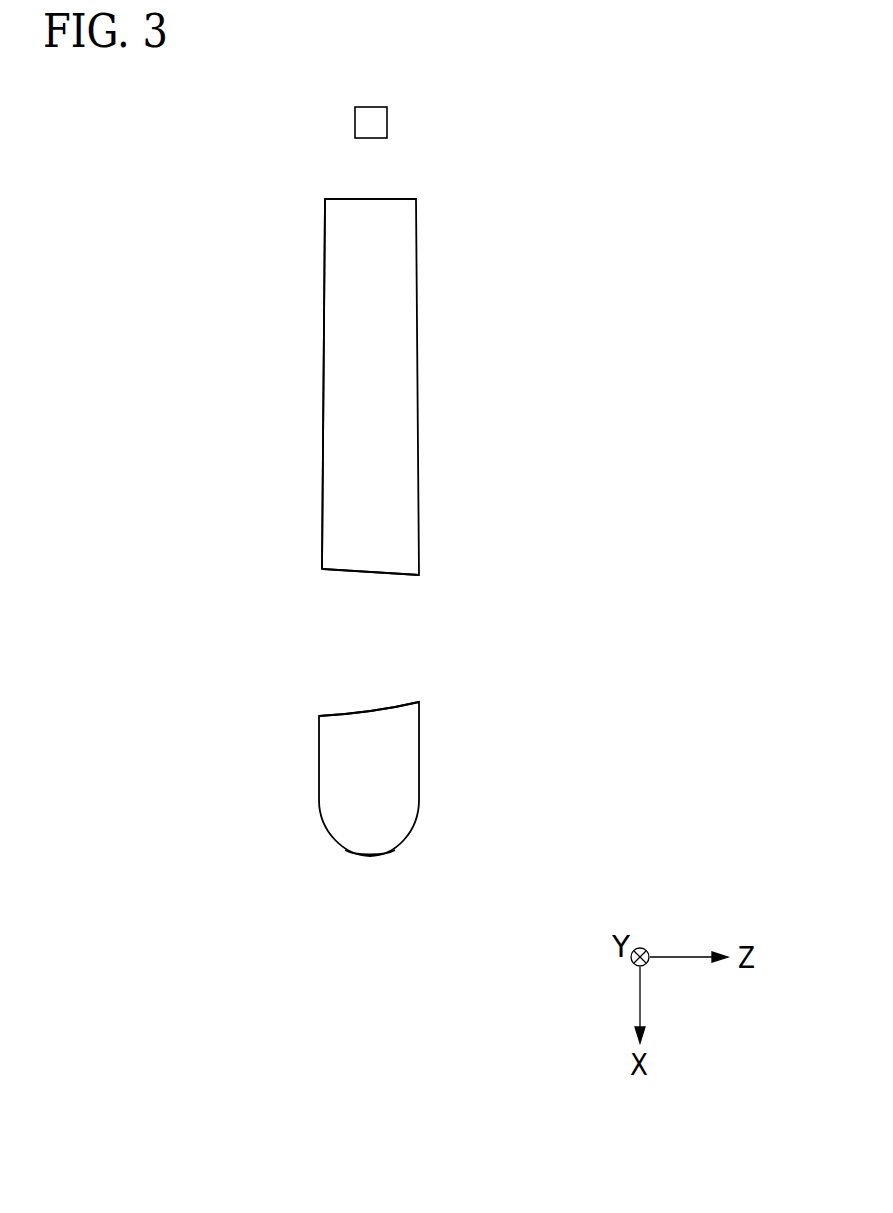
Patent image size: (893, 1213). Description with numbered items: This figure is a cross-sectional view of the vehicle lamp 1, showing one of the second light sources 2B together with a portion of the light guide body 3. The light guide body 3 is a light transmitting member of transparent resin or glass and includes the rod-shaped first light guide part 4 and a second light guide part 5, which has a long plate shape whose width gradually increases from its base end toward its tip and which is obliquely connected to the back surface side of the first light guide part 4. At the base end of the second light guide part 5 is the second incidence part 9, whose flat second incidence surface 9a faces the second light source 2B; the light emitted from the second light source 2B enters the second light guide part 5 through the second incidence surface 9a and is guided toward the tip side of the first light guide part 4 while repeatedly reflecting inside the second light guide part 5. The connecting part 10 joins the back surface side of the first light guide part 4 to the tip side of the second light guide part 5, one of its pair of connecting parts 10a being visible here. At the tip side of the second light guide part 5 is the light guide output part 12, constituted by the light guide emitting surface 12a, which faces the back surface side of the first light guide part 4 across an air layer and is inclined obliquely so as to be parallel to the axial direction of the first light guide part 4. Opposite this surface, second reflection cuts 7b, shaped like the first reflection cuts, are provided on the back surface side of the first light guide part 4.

The vehicle lamp 1 is at (254, 110).
The second light source 2B is at (387, 122).
The light guide body 3 is at (442, 390).
The first light guide part 4 is at (353, 775).
The second light guide part 5 is at (339, 388).
The second reflection cut 7b is at (380, 710).
The second incidence part 9 is at (417, 178).
The second incidence surface 9a is at (375, 199).
The connecting part 10 is at (420, 634).
The connecting part 10a is at (370, 857).
The light guide output part 12 is at (434, 588).
The light guide emitting surface 12a is at (375, 574).